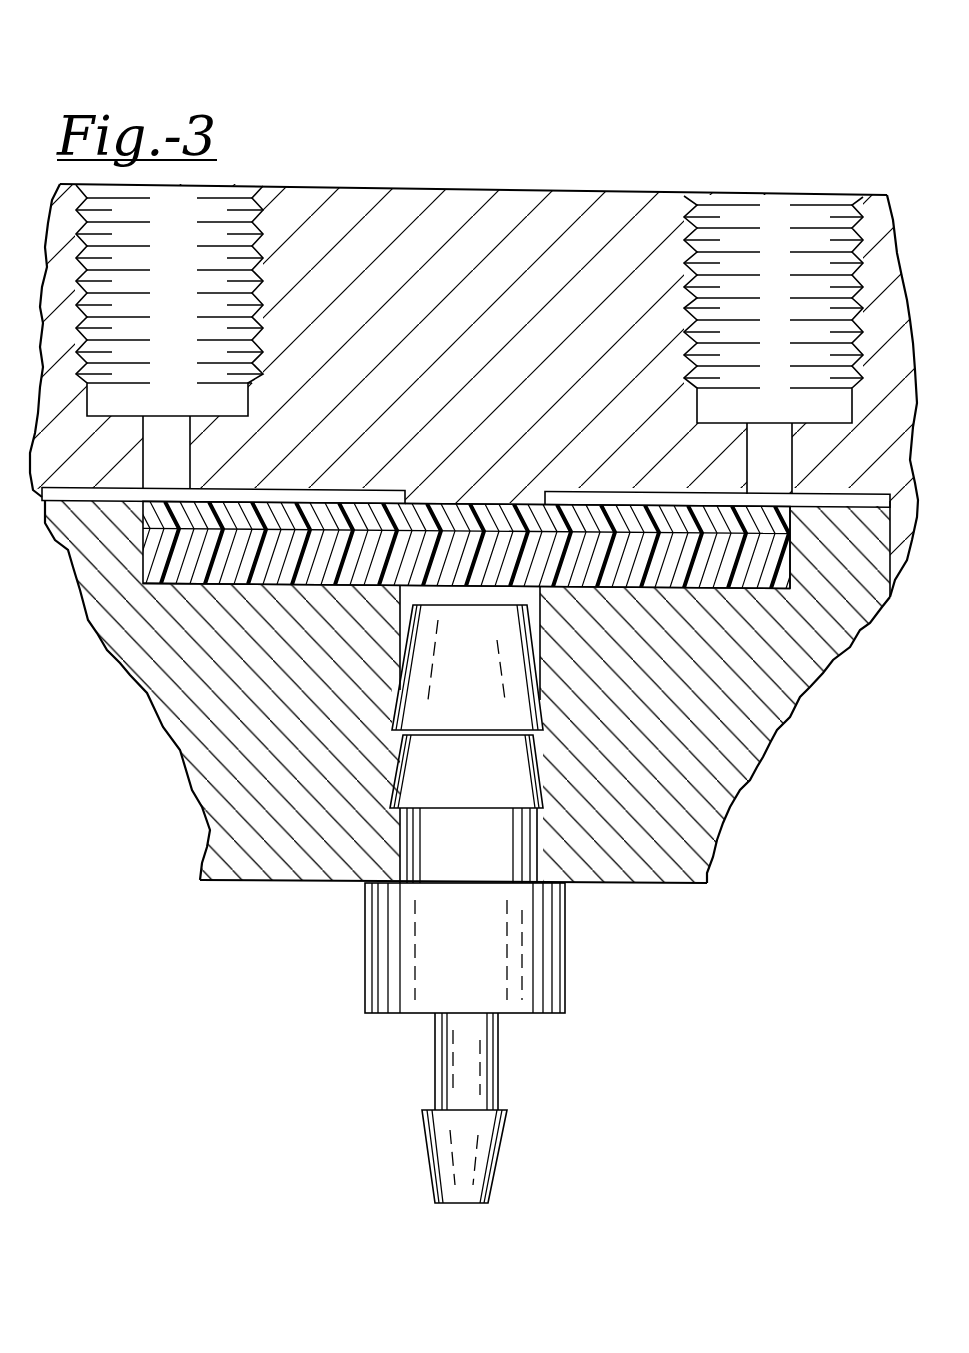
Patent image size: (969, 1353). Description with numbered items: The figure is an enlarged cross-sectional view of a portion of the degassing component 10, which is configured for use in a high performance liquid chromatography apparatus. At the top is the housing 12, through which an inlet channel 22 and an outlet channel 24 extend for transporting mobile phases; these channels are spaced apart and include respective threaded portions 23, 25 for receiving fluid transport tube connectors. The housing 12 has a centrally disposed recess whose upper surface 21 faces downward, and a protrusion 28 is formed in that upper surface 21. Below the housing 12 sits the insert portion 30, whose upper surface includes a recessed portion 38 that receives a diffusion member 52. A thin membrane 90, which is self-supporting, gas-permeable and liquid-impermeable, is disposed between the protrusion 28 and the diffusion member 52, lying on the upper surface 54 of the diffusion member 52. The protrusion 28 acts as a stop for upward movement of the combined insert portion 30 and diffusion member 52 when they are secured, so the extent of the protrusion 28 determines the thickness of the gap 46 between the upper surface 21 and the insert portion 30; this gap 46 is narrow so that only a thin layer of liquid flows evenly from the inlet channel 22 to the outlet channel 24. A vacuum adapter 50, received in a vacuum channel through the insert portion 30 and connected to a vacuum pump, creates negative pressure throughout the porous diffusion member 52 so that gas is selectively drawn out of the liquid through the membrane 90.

The degassing component 10 is at (648, 155).
The housing 12 is at (540, 186).
The threaded portion 23 is at (257, 227).
The threaded portion 25 is at (718, 196).
The inlet channel 22 is at (192, 467).
The outlet channel 24 is at (746, 462).
The gap 46 is at (400, 490).
The upper surface 21 is at (590, 496).
The protrusion 28 is at (443, 515).
The recessed portion 38 is at (151, 567).
The upper surface 54 is at (497, 530).
The diffusion member 52 is at (720, 590).
The thin membrane 90 is at (790, 523).
The insert portion 30 is at (656, 898).
The vacuum adapter 50 is at (565, 1015).